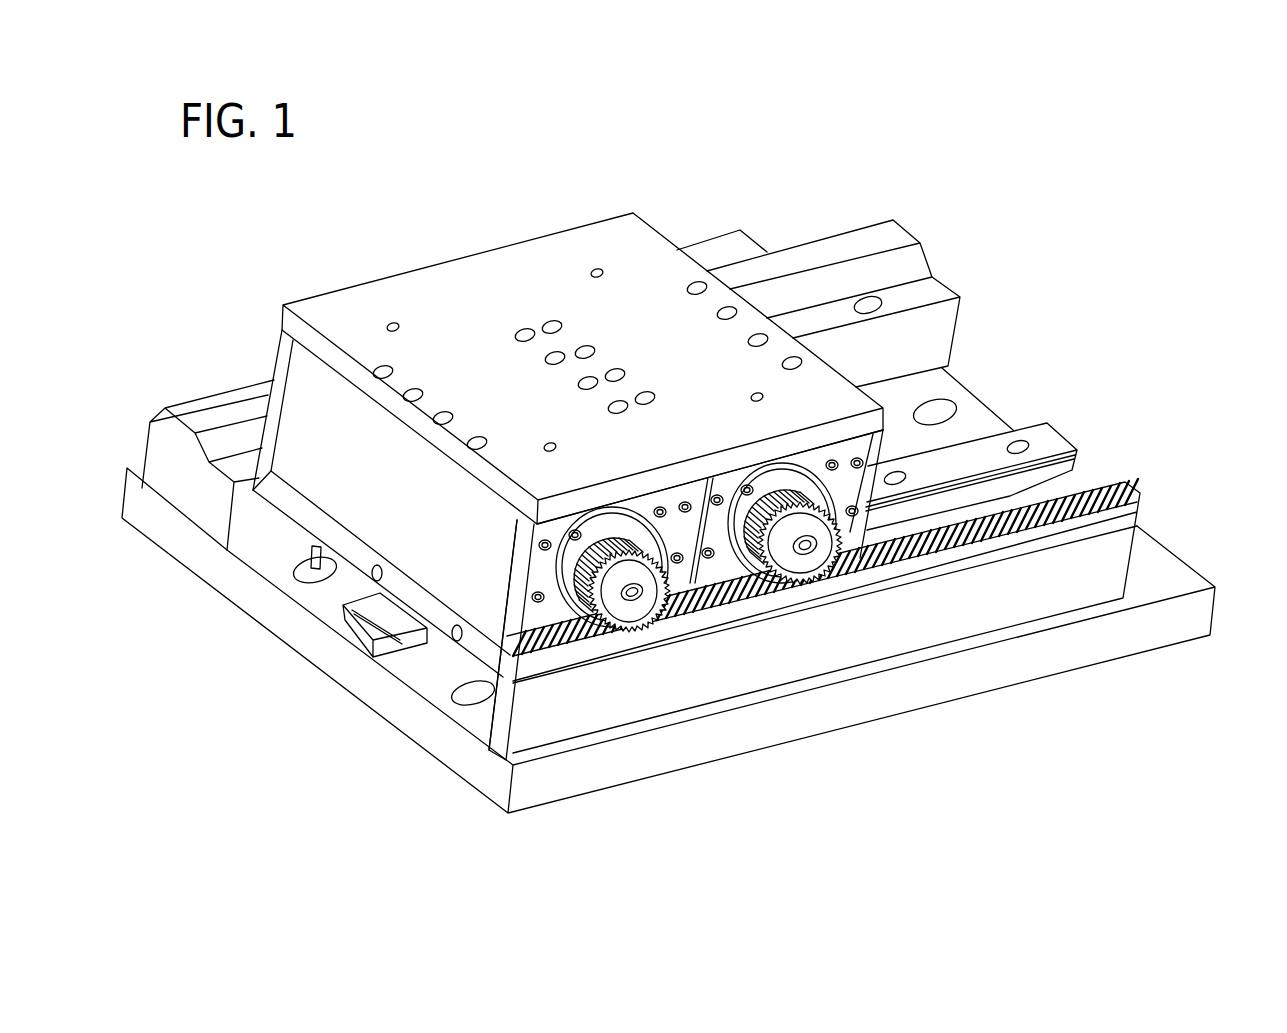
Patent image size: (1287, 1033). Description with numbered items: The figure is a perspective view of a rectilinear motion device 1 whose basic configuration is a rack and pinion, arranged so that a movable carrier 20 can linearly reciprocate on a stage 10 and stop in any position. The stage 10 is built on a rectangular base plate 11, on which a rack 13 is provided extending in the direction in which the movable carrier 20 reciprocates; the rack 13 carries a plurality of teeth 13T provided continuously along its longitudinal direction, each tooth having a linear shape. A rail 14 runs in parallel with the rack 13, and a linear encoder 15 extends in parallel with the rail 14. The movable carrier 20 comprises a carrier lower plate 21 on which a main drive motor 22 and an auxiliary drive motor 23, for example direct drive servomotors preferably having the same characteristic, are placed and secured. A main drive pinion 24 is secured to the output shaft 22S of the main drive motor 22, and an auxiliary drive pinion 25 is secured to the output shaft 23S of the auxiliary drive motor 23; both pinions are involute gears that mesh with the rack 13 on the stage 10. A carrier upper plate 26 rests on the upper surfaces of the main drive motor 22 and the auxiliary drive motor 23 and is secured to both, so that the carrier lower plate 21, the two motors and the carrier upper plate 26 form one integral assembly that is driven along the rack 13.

The rectilinear motion device 1 is at (795, 100).
The stage 10 is at (983, 400).
The base plate 11 is at (1197, 577).
The rack 13 is at (858, 591).
The teeth 13T is at (1125, 480).
The rail 14 is at (1060, 430).
The linear encoder 15 is at (945, 280).
The movable carrier 20 is at (521, 505).
The carrier lower plate 21 is at (303, 518).
The main drive motor 22 is at (540, 620).
The output shaft 22S is at (634, 603).
The auxiliary drive motor 23 is at (710, 580).
The output shaft 23S is at (806, 556).
The main drive pinion 24 is at (595, 630).
The auxiliary drive pinion 25 is at (768, 590).
The carrier upper plate 26 is at (482, 250).